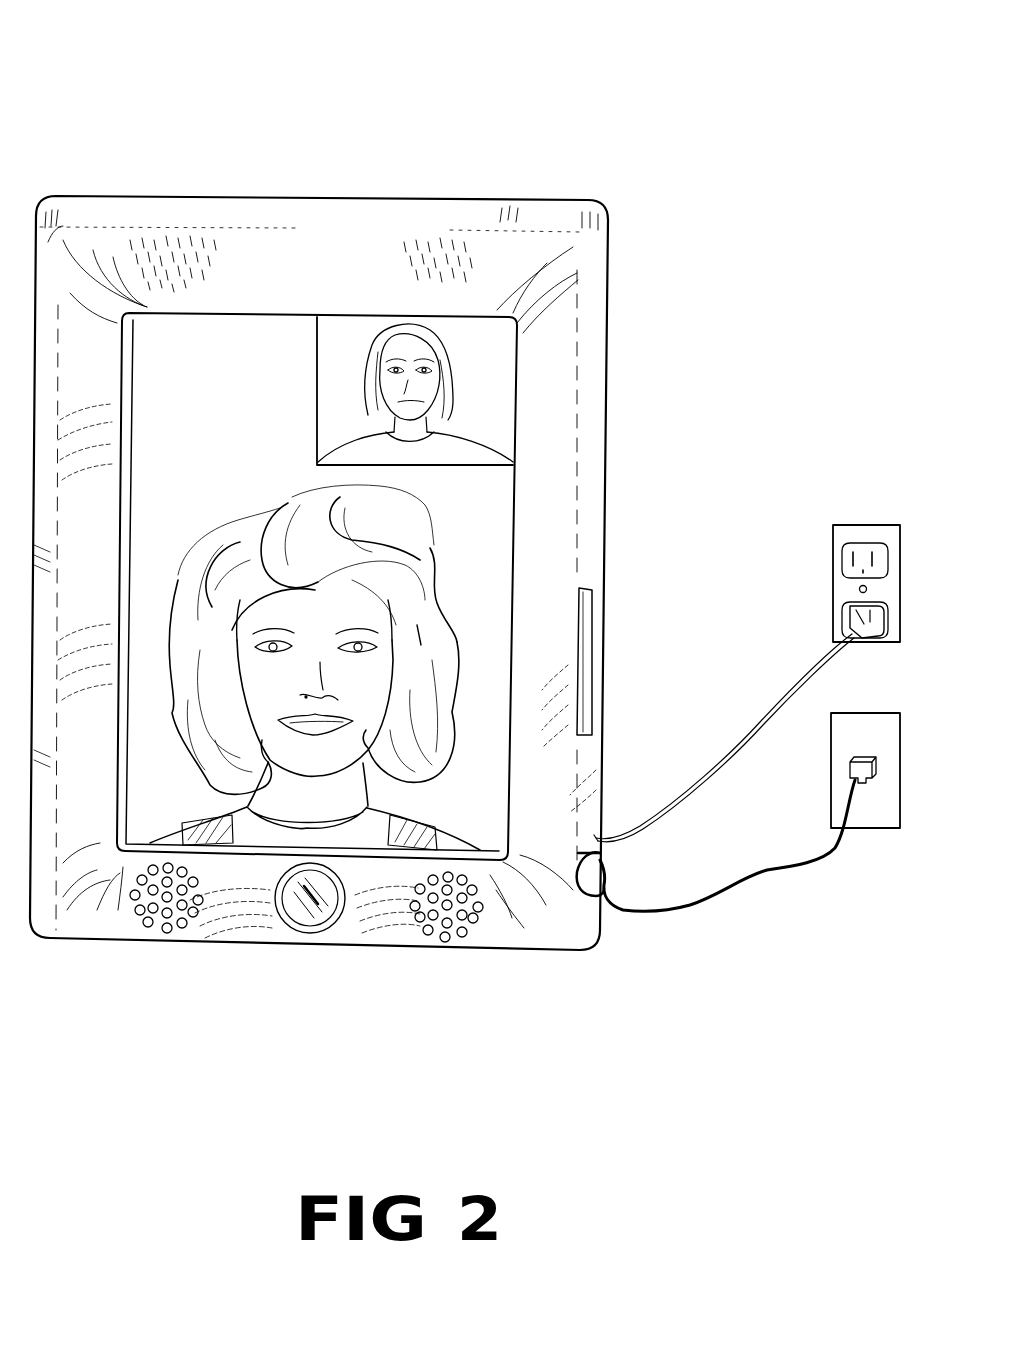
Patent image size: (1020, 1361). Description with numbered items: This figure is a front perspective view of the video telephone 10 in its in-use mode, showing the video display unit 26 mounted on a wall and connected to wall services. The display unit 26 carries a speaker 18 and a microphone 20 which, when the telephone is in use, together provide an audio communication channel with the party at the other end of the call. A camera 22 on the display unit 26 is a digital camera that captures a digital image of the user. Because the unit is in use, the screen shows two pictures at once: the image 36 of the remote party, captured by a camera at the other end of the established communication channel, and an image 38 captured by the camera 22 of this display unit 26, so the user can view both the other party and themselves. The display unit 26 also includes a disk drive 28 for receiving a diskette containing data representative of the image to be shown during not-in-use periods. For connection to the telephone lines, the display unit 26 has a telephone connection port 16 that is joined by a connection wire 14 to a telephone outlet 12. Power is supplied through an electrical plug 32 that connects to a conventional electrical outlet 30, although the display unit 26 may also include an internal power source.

The video telephone 10 is at (122, 113).
The telephone outlet 12 is at (858, 826).
The connection wire 14 is at (750, 878).
The telephone connection port 16 is at (598, 915).
The speaker 18 is at (458, 935).
The microphone 20 is at (136, 930).
The camera 22 is at (312, 926).
The video display unit 26 is at (487, 214).
The disk drive 28 is at (597, 650).
The electrical outlet 30 is at (848, 534).
The electrical plug 32 is at (856, 612).
The image of the party captured by a camera on the other end of the established comm 36 is at (492, 590).
The image captured by the camera of the present display unit 38 is at (495, 386).